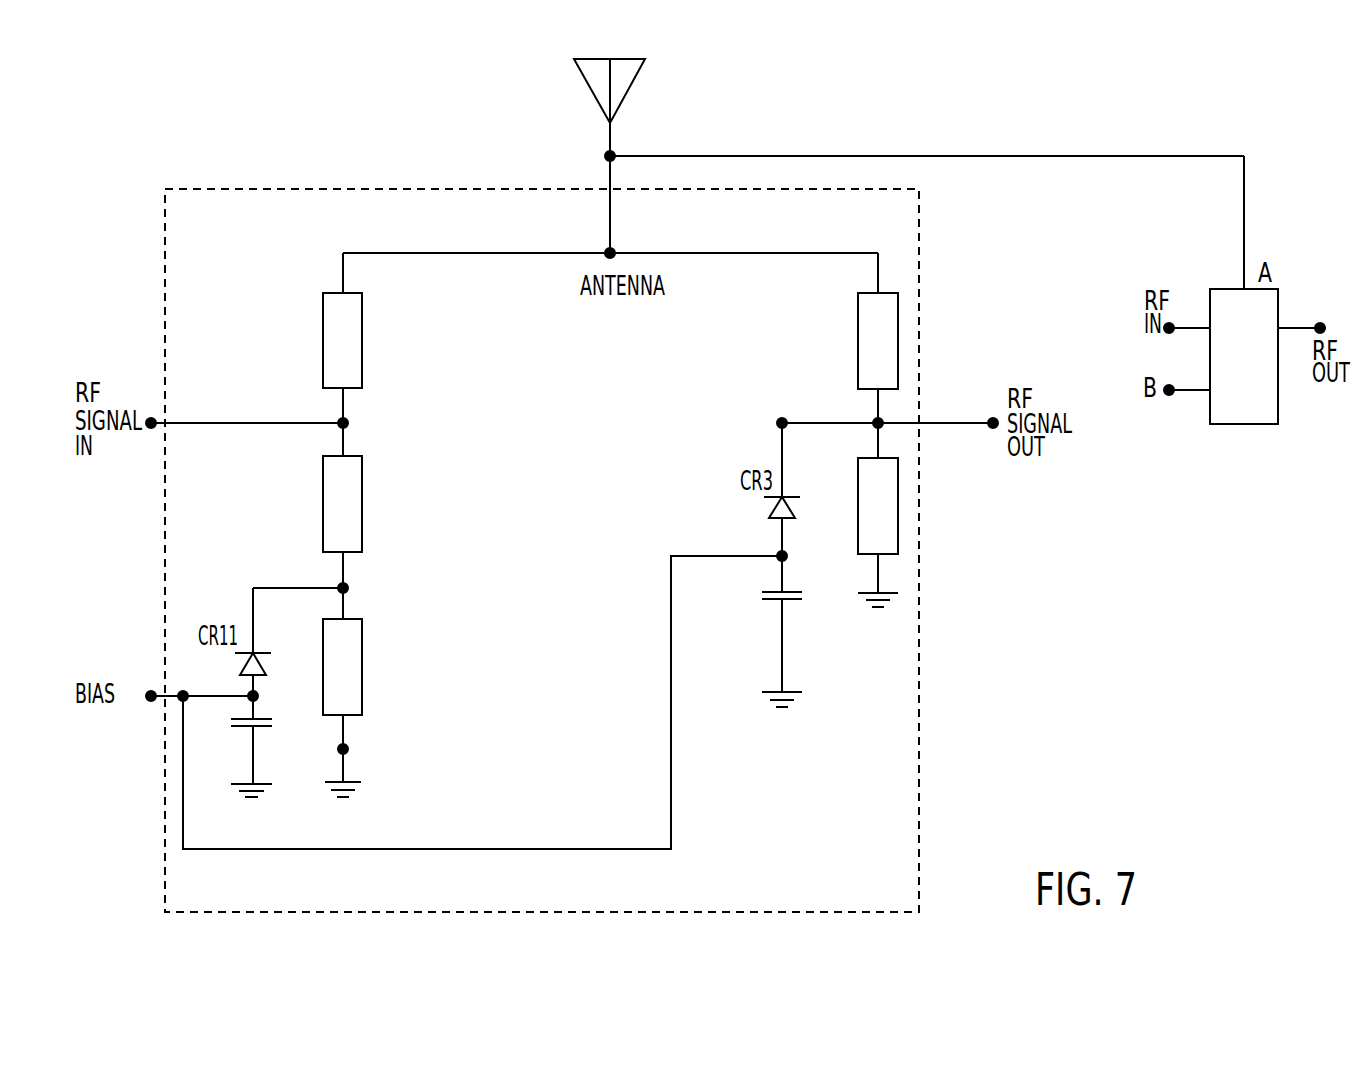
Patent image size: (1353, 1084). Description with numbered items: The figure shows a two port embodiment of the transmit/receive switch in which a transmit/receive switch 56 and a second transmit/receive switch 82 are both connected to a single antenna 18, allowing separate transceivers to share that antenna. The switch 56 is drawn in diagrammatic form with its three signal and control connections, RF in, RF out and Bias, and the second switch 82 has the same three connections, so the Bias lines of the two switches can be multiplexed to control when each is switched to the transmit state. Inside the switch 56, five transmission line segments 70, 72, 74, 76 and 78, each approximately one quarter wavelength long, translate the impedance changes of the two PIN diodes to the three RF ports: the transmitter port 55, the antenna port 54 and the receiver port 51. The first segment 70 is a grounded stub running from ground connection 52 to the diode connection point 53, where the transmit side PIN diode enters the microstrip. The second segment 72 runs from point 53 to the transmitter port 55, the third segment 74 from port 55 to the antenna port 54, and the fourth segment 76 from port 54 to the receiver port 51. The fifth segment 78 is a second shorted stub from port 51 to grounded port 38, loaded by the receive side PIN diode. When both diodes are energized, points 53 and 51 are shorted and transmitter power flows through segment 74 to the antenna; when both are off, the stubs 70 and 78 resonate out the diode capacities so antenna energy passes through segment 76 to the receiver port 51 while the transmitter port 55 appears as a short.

The antenna 18 is at (572, 84).
The antenna port 54 is at (598, 258).
The third transmission line segment 74 is at (350, 348).
The fourth transmission line segment 76 is at (870, 349).
The transmitter port 55 is at (357, 423).
The receiver port 51 is at (872, 418).
The second transmission line segment 72 is at (350, 512).
The fifth transmission line segment 78 is at (886, 528).
The diode connection point 53 is at (357, 588).
The first transmission line segment 70 is at (350, 675).
The ground connection 52 is at (347, 750).
The grounded port 38 is at (877, 618).
The transmit/receive switch 56 is at (920, 805).
The second transmit/receive switch 82 is at (1243, 425).